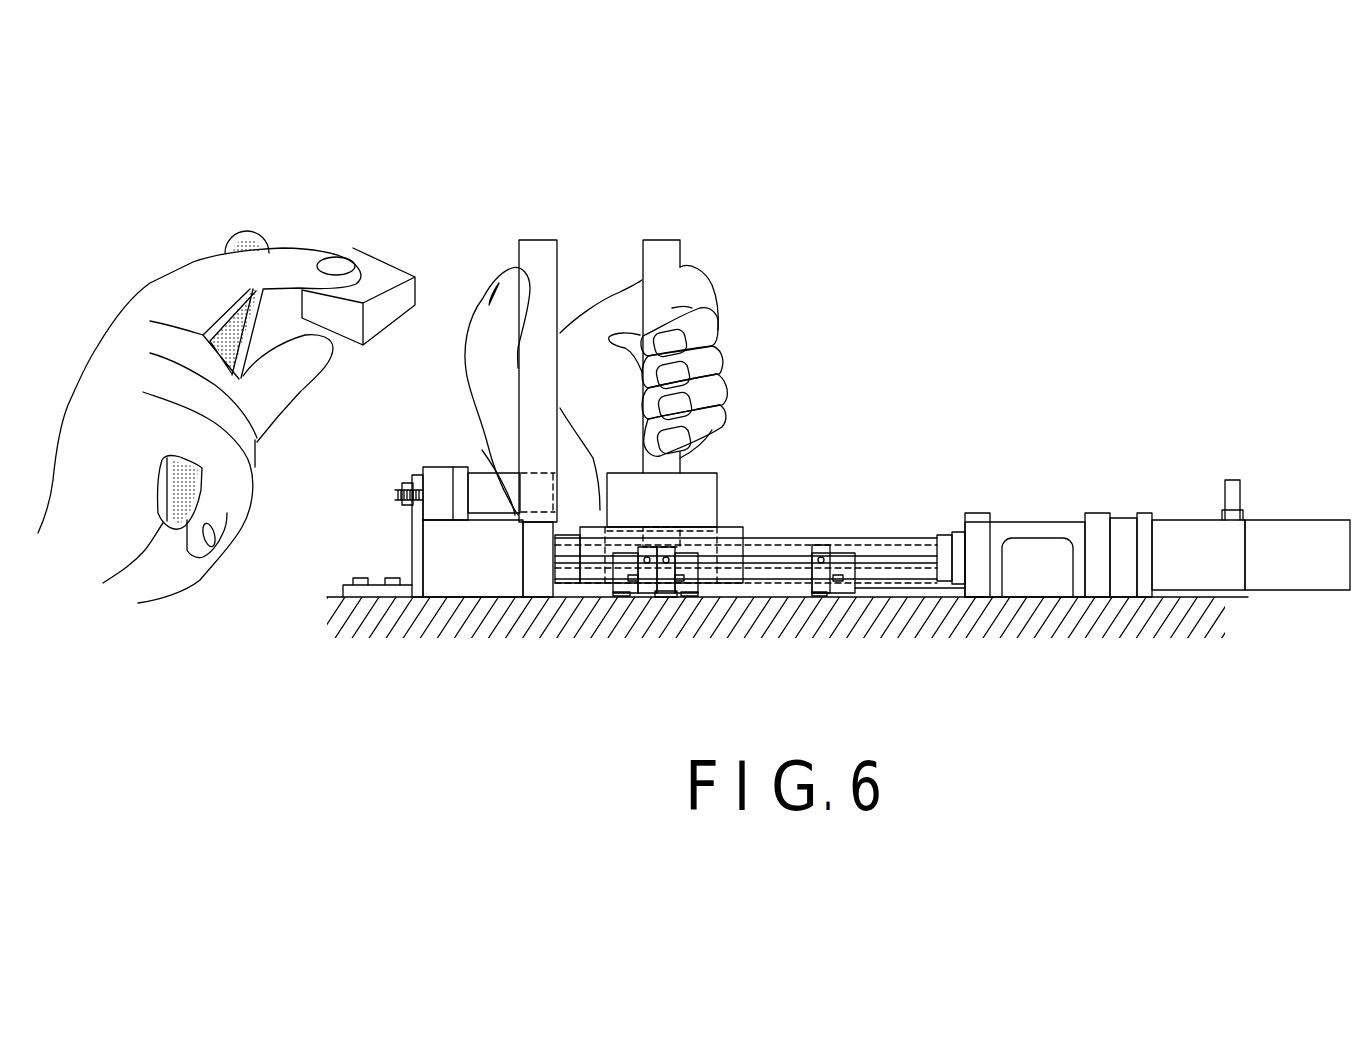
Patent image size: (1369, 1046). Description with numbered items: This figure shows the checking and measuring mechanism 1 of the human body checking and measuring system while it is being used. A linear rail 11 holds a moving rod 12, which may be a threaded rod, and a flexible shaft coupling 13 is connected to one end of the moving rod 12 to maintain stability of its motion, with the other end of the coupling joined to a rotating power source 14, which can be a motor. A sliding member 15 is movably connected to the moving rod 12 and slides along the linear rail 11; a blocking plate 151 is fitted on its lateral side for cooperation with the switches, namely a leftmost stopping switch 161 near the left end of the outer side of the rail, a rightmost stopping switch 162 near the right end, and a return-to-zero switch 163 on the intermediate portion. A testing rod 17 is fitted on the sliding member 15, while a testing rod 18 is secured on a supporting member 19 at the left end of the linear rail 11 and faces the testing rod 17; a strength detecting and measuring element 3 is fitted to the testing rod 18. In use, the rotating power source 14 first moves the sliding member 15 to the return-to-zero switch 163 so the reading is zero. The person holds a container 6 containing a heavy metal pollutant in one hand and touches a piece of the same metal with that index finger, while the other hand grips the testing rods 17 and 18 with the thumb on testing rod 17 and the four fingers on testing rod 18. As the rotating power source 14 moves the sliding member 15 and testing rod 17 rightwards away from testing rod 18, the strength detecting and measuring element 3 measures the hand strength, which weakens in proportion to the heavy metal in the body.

The checking and measuring mechanism 1 is at (1285, 512).
The strength detecting and measuring element 3 is at (437, 483).
The container 6 is at (244, 232).
The linear rail 11 is at (570, 590).
The moving rod 12 is at (883, 540).
The flexible shaft coupling 13 is at (1028, 555).
The rotating power source 14 is at (1180, 530).
The sliding member 15 is at (707, 490).
The testing rod 17 is at (650, 262).
The testing rod 18 is at (535, 262).
The supporting member 19 is at (420, 535).
The blocking plate 151 is at (673, 537).
The leftmost stopping switch 161 is at (642, 585).
The rightmost stopping switch 162 is at (830, 585).
The return-to-zero switch 163 is at (672, 590).